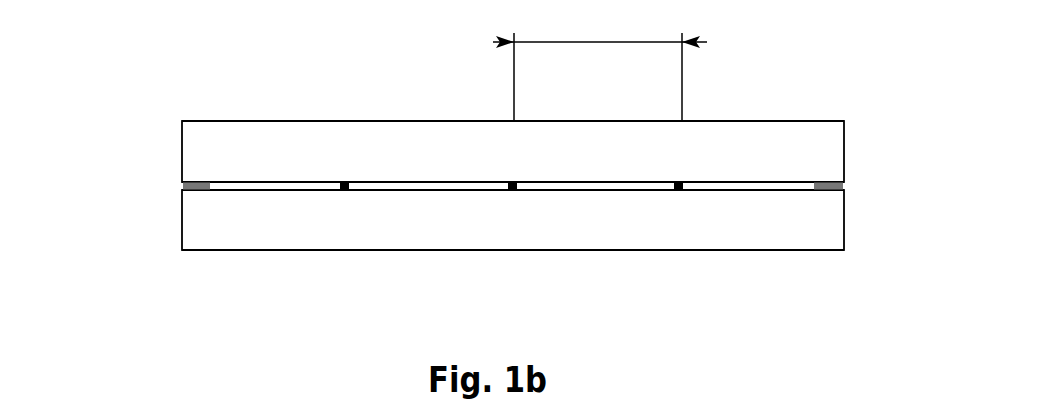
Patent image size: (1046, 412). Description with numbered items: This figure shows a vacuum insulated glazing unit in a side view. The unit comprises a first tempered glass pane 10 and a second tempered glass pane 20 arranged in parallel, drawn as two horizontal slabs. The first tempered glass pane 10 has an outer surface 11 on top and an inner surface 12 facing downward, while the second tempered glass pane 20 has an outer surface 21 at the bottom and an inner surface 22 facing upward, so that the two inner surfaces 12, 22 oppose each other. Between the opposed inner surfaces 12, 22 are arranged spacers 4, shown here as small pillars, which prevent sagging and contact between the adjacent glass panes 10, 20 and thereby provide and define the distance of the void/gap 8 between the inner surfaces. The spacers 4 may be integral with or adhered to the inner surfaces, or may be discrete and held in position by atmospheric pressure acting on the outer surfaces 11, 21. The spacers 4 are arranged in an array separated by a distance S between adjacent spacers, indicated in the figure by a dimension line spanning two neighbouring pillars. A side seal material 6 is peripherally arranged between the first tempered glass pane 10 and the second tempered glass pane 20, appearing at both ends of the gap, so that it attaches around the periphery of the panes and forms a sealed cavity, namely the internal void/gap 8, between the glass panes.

The spacers 4 is at (347, 184).
The side seal material 6 is at (203, 186).
The void/gap 8 is at (405, 186).
The first tempered glass pane 10 is at (182, 144).
The outer surface 11 is at (788, 121).
The inner surface 12 is at (770, 182).
The second tempered glass pane 20 is at (182, 222).
The outer surface 21 is at (782, 250).
The inner surface 22 is at (770, 190).
The distance between adjacent spacers S is at (600, 65).